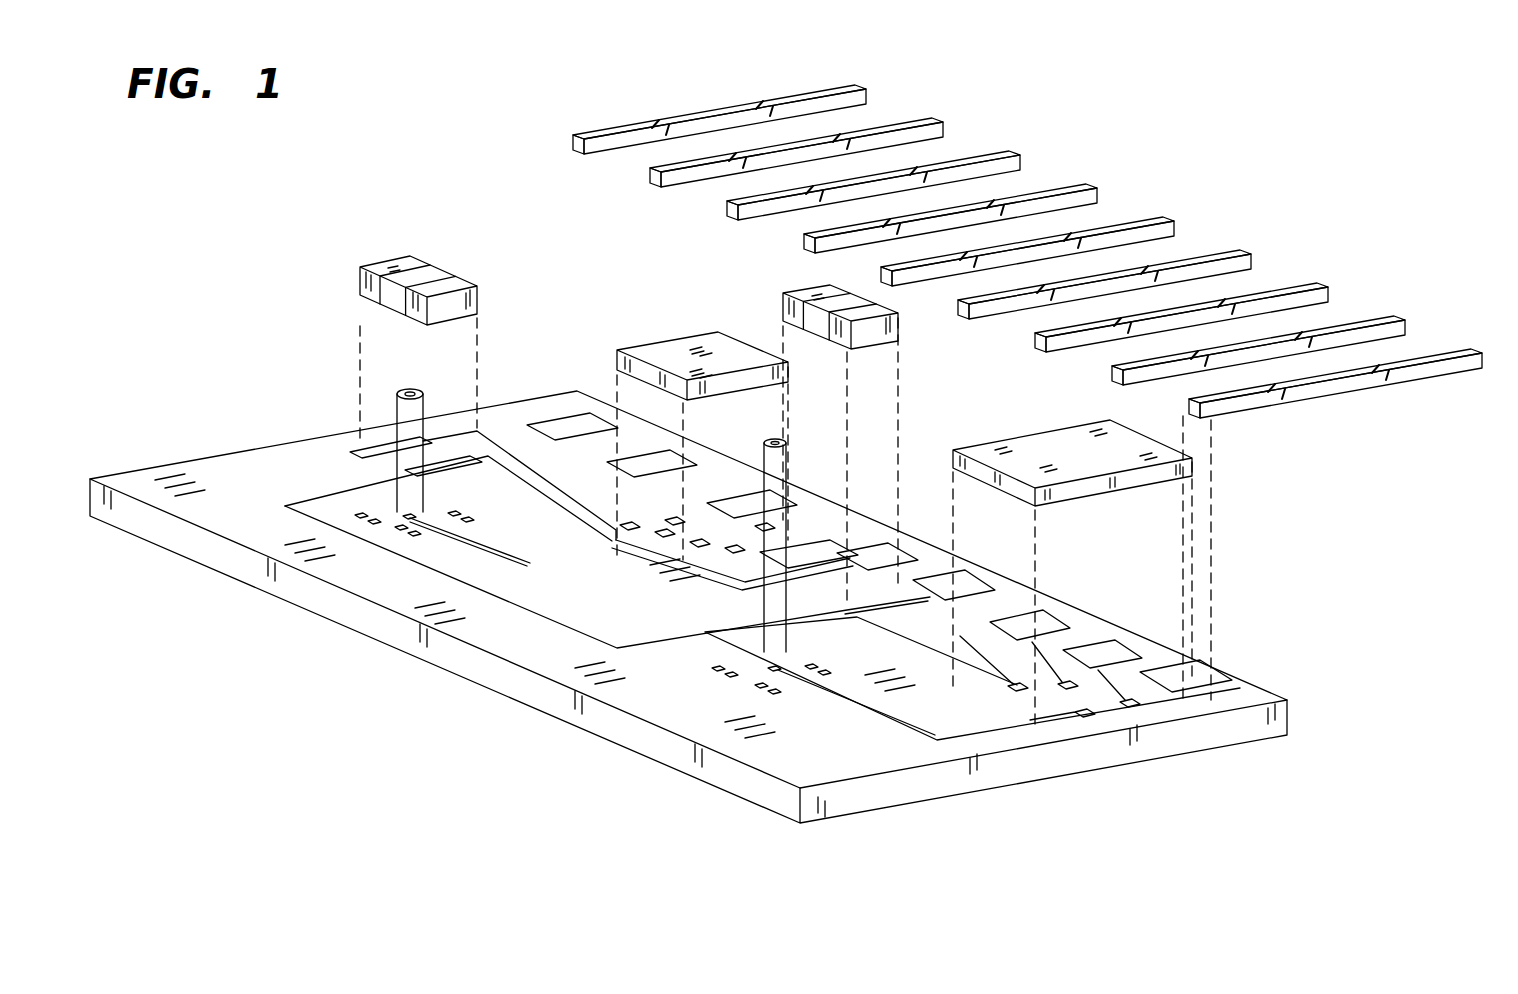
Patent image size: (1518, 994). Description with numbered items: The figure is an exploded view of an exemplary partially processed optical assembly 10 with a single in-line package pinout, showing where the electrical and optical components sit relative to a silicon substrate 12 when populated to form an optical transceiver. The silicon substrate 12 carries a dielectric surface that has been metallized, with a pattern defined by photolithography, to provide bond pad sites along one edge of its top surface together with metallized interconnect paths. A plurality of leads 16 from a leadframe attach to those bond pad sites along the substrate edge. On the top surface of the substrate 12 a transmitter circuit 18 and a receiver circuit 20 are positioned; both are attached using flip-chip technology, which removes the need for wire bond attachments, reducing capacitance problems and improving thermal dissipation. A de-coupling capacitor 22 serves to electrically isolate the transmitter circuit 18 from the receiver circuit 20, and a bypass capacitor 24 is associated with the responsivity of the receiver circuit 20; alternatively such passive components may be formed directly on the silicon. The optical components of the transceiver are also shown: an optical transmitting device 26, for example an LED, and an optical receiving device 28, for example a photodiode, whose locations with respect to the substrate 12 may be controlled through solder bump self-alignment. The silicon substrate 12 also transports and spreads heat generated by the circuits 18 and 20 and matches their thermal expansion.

The optical assembly 10 is at (269, 699).
The silicon substrate 12 is at (660, 712).
The leads 16 is at (1378, 383).
The transmitter circuit 18 is at (1045, 440).
The receiver circuit 20 is at (681, 352).
The de-coupling capacitor 22 is at (811, 300).
The bypass capacitor 24 is at (443, 278).
The optical transmitting device 26 is at (789, 447).
The optical receiving device 28 is at (408, 388).